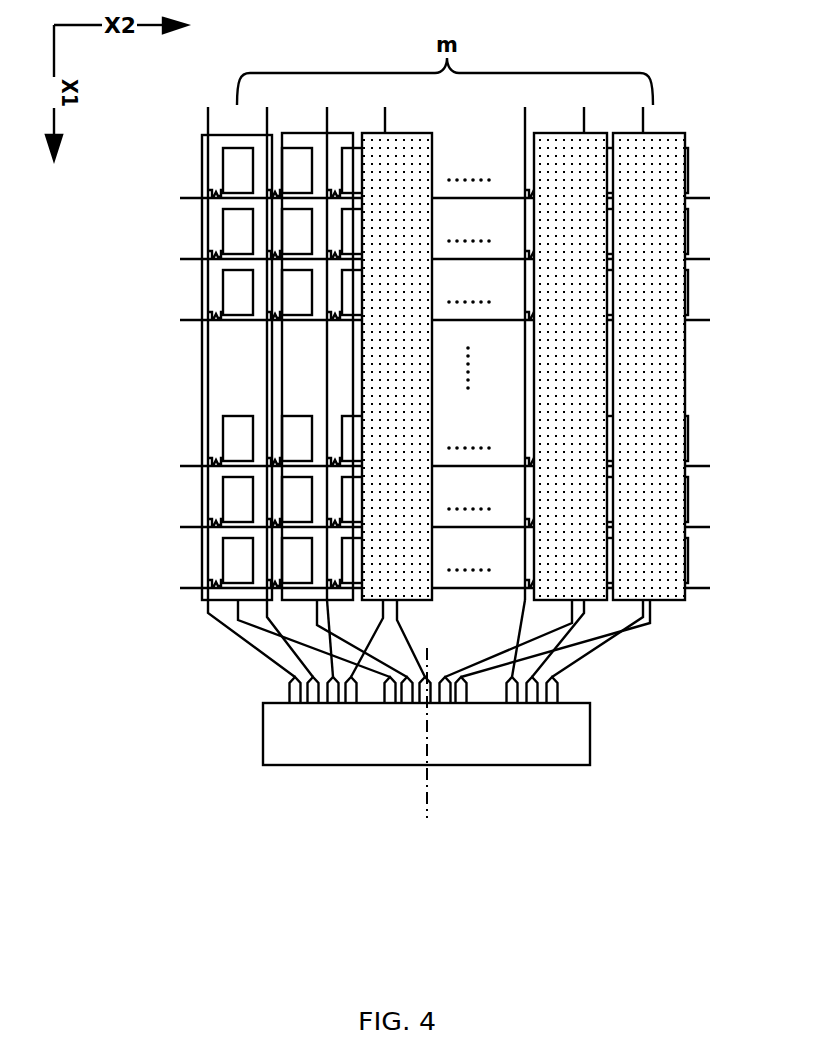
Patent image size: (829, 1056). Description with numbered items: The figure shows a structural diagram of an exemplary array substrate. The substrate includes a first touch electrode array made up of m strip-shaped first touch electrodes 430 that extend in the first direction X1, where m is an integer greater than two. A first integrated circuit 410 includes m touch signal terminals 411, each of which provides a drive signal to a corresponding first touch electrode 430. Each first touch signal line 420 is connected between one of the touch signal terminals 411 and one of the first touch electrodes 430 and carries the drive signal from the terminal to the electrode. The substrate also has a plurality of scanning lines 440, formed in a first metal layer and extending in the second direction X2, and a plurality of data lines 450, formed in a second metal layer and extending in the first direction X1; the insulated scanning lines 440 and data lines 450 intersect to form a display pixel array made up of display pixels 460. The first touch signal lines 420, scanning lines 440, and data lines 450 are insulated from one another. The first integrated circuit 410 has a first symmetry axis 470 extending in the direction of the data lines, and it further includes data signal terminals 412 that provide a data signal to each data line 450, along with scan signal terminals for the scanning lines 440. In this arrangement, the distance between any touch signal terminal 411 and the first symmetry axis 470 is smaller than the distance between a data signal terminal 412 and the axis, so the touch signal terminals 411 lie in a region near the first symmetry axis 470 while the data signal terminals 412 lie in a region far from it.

The first integrated circuit 410 is at (590, 722).
The touch signal terminal 411 is at (467, 690).
The data signal terminal 412 is at (558, 699).
The first touch signal line 420 is at (654, 618).
The first touch electrode 430 is at (667, 133).
The scanning line 440 is at (190, 191).
The data line 450 is at (207, 109).
The display pixel 460 is at (690, 163).
The first symmetry axis 470 is at (430, 817).